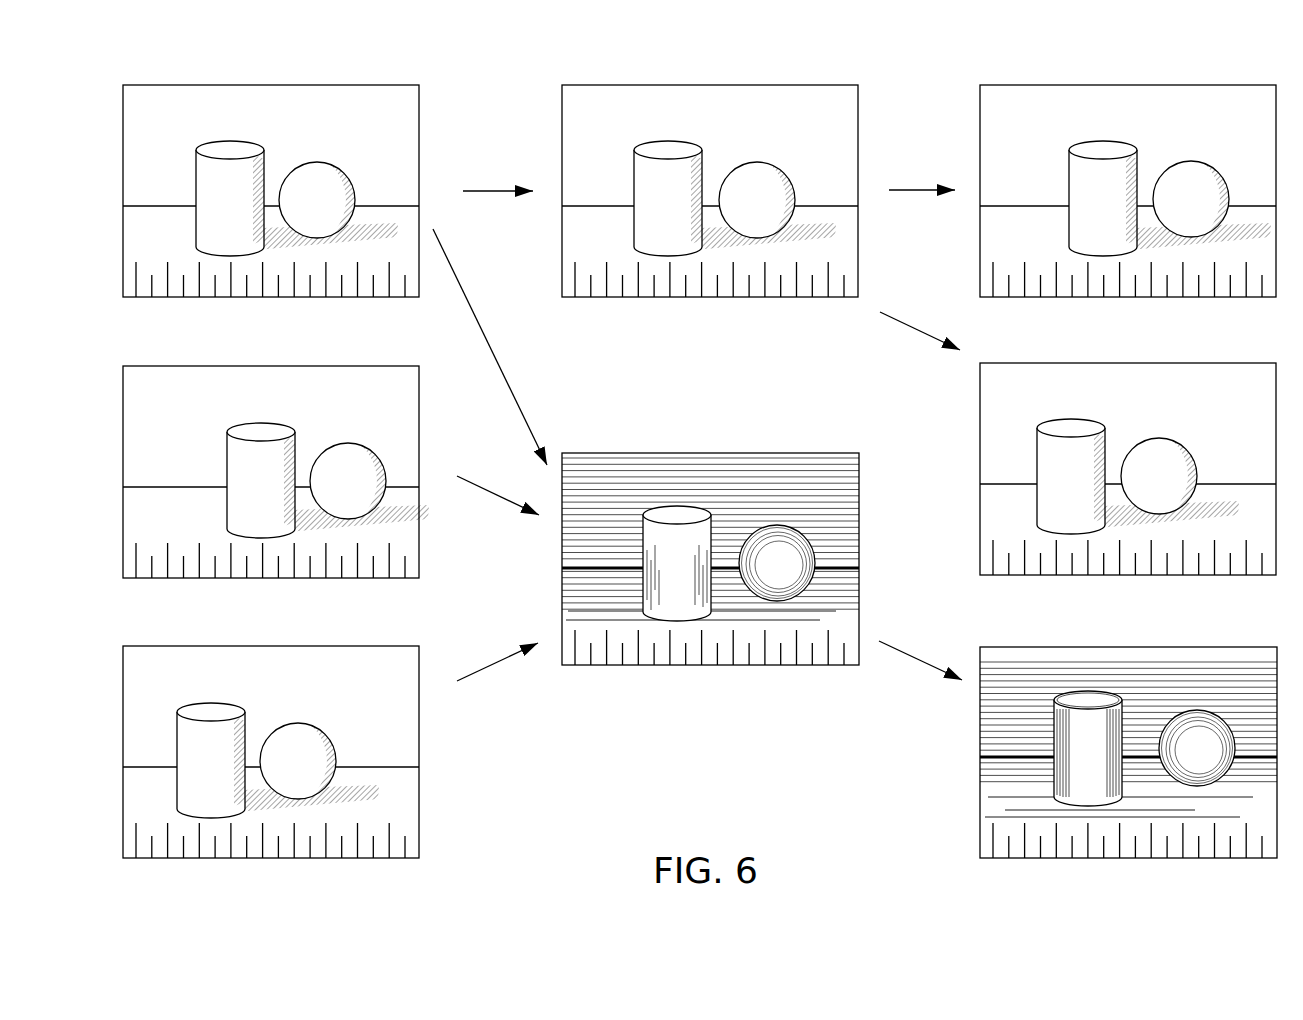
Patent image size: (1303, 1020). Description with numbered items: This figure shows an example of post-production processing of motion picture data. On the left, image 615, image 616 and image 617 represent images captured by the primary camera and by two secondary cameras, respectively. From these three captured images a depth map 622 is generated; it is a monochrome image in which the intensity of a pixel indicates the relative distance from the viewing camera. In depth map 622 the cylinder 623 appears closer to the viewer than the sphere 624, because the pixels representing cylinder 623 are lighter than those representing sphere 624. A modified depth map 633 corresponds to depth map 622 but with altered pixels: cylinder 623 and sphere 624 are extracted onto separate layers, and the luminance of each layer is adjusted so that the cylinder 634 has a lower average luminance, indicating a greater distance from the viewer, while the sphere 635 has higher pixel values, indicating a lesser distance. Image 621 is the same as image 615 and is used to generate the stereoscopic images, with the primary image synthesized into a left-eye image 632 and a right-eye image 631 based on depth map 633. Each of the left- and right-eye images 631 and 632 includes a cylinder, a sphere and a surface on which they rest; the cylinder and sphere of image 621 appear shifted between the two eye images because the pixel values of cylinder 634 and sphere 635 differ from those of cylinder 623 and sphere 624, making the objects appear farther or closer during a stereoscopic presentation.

The image 615 is at (347, 84).
The image 616 is at (337, 365).
The image 617 is at (340, 645).
The image 621 is at (777, 84).
The depth map 622 is at (835, 452).
The cylinder 623 is at (674, 512).
The sphere 624 is at (778, 550).
The right-eye image 631 is at (1175, 84).
The left-eye image 632 is at (1200, 362).
The depth map 633 is at (1227, 646).
The cylinder 634 is at (1085, 703).
The sphere 635 is at (1197, 740).